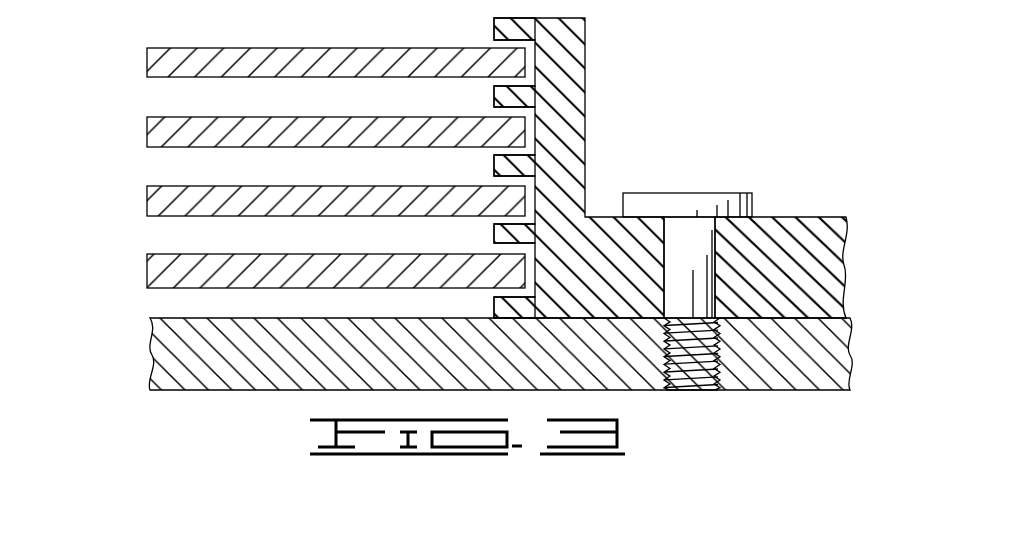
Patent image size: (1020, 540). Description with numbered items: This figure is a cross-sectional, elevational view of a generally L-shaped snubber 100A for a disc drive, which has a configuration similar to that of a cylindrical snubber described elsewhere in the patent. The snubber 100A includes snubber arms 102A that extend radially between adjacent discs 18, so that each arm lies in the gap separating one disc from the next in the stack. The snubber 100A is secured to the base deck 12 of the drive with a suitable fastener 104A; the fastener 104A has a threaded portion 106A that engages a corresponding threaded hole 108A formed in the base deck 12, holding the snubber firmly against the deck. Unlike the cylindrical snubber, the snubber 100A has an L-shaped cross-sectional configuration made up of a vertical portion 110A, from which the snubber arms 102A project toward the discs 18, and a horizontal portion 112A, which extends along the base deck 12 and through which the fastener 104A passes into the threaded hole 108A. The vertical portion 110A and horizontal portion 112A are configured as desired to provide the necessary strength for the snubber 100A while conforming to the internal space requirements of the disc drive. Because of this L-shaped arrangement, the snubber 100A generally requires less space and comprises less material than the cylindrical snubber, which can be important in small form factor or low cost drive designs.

The base deck 12 is at (150, 320).
The discs 18 is at (152, 263).
The L-shaped snubber 100A is at (693, 79).
The snubber arms 102A is at (494, 310).
The fastener 104A is at (677, 202).
The threaded portion 106A is at (757, 393).
The threaded hole 108A is at (696, 397).
The vertical portion 110A is at (576, 72).
The horizontal portion 112A is at (797, 230).